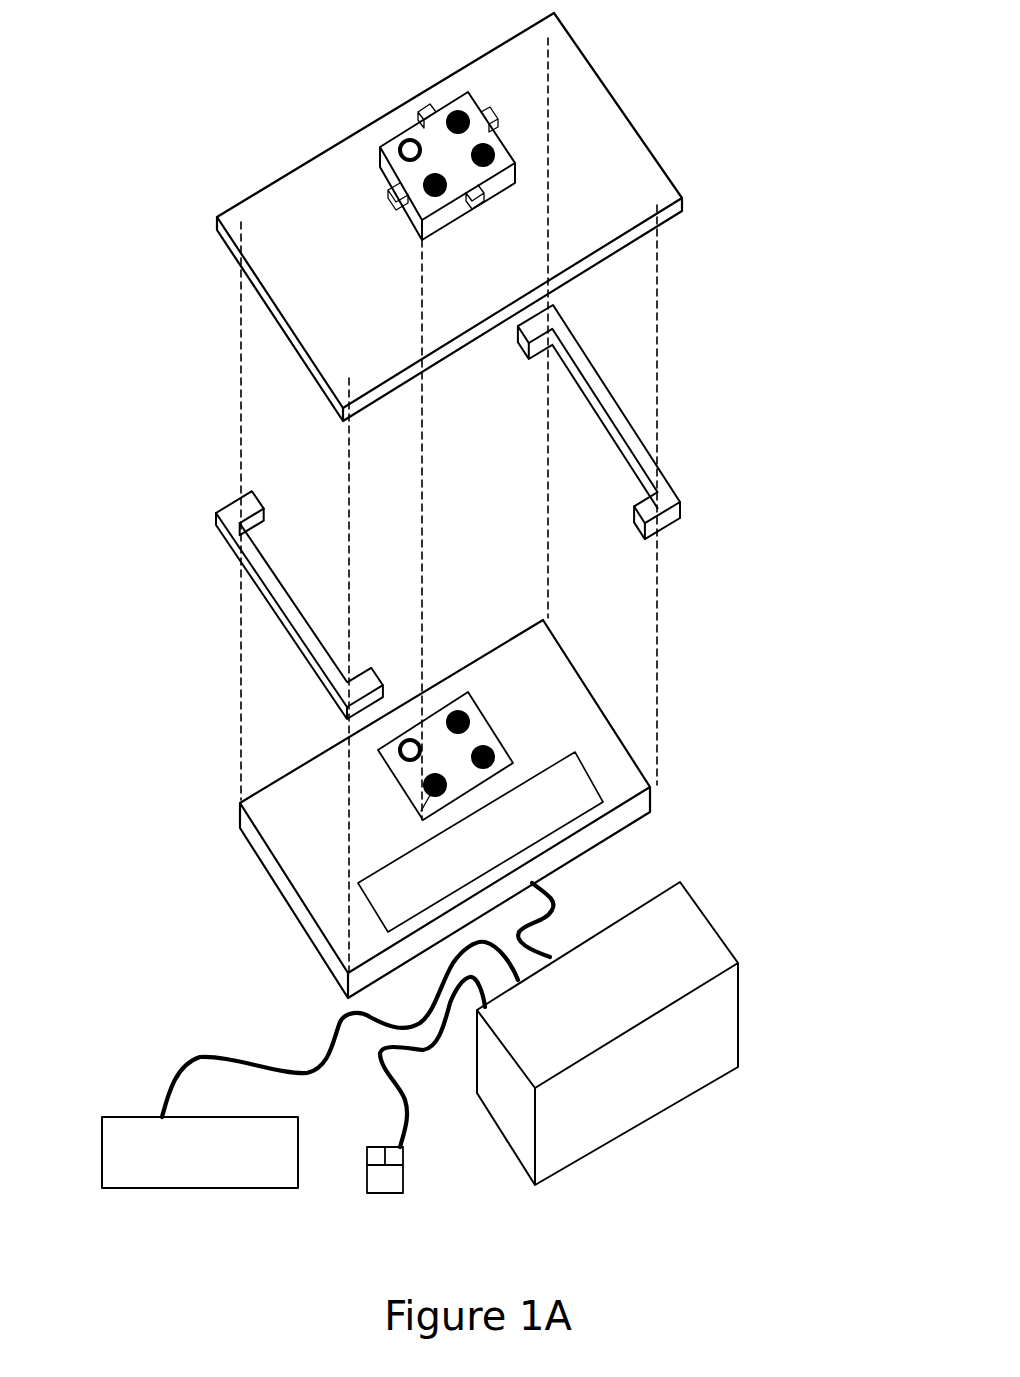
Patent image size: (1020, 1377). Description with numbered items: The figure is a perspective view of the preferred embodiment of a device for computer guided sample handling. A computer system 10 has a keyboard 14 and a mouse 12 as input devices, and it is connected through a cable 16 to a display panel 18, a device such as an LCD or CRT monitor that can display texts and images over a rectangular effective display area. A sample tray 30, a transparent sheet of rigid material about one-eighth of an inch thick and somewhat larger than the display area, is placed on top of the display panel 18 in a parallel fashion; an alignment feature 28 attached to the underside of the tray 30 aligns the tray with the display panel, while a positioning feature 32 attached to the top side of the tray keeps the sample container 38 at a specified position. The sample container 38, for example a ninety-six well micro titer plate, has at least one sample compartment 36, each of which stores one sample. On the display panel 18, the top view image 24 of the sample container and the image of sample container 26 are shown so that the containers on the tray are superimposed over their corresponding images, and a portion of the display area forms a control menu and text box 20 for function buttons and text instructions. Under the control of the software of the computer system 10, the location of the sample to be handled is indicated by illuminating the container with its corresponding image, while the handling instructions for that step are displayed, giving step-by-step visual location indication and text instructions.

The computer system 10 is at (637, 1090).
The mouse 12 is at (387, 1193).
The keyboard 14 is at (132, 1142).
The cable 16 is at (535, 890).
The display panel 18 is at (633, 810).
The control menu and text box 20 is at (410, 897).
The image of sample compartment 24 is at (403, 765).
The image of sample container 26 is at (406, 758).
The alignment feature 28 is at (663, 490).
The sample tray 30 is at (628, 238).
The positioning feature 32 is at (427, 112).
The sample compartment 36 is at (412, 138).
The sample container 38 is at (508, 144).